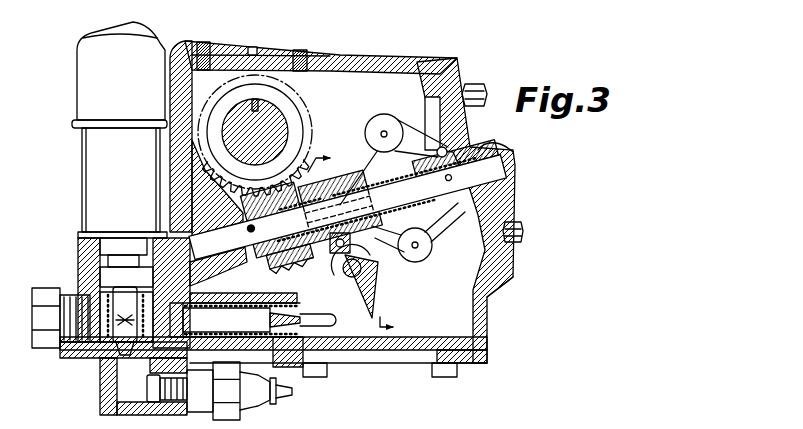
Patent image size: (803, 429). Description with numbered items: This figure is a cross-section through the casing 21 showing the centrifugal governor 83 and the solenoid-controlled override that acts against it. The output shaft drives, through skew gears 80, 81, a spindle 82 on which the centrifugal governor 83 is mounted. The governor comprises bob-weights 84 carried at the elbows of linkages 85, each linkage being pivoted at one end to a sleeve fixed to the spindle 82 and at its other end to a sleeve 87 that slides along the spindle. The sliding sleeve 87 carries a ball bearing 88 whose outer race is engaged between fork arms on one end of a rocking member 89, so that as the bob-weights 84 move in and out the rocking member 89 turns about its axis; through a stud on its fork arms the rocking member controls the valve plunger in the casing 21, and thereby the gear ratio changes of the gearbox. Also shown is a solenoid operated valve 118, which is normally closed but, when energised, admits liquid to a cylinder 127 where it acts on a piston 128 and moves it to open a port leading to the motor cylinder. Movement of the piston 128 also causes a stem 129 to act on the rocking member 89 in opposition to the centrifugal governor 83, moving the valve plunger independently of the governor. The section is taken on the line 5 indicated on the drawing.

The section line 5 is at (363, 240).
The casing 21 is at (417, 70).
The skew gear 80 is at (318, 112).
The skew gear 81 is at (307, 267).
The spindle 82 is at (372, 234).
The centrifugal governor 83 is at (490, 291).
The bob-weights 84 is at (390, 120).
The linkages 85 is at (480, 127).
The sleeve 87 is at (348, 145).
The ball bearing 88 is at (304, 146).
The rocking member 89 is at (366, 282).
The solenoid operated valve 118 is at (123, 298).
The cylinder 127 is at (257, 373).
The piston 128 is at (167, 325).
The stem 129 is at (332, 327).